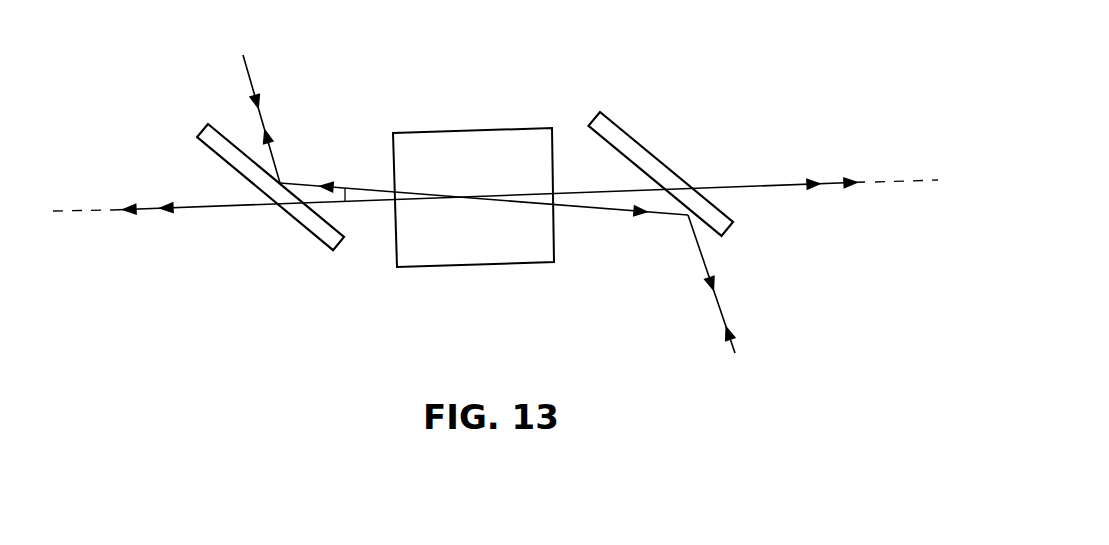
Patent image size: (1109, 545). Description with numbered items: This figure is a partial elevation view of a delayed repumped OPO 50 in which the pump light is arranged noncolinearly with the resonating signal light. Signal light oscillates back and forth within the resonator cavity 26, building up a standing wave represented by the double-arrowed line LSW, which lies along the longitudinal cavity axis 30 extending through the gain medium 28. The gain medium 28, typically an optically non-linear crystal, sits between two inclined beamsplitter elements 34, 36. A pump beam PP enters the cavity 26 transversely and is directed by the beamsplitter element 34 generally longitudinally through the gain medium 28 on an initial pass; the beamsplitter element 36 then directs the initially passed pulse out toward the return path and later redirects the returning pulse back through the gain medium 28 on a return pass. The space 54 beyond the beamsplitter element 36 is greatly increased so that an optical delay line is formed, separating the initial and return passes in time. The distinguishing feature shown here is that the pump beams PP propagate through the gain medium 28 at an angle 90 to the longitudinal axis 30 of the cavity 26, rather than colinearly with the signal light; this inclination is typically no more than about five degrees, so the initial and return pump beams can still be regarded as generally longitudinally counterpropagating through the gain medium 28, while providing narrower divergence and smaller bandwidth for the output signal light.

The resonator cavity 26 is at (163, 171).
The gain medium 28 is at (453, 140).
The longitudinal cavity axis 30 is at (75, 212).
The beamsplitter element 34 is at (303, 217).
The beamsplitter element 36 is at (613, 122).
The OPO 50 is at (355, 372).
The space 54 is at (693, 350).
The angle 90 is at (362, 197).
The pump beam PP is at (248, 70).
The standing wave LSW is at (777, 185).